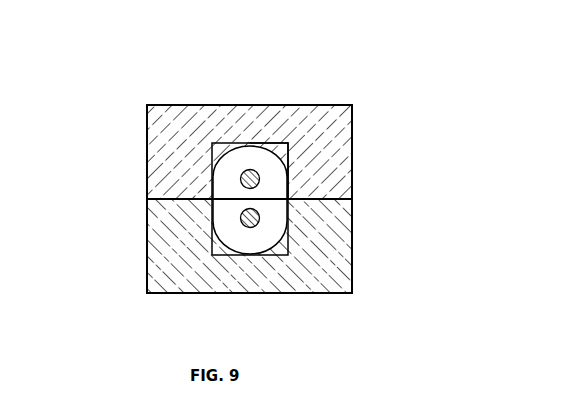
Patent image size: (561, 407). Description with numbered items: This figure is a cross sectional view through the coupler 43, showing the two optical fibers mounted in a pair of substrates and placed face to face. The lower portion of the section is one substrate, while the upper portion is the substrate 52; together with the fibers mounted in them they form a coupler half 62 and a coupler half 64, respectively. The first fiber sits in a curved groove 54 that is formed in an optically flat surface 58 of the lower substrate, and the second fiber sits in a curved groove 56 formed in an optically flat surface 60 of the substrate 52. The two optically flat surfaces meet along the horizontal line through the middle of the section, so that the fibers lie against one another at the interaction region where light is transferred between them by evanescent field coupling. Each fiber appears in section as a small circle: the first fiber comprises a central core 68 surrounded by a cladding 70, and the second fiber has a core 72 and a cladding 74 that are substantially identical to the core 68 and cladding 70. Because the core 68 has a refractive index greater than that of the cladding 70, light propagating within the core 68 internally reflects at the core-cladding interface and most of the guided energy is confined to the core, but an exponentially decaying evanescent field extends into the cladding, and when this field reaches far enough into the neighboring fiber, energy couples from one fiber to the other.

The coupler 43 is at (457, 115).
The substrate 52 is at (265, 105).
The curved groove 54 is at (286, 246).
The curved groove 56 is at (288, 152).
The optically flat surface 58 is at (153, 198).
The optically flat surface 60 is at (343, 200).
The coupler half 62 is at (412, 283).
The coupler half 64 is at (87, 88).
The central core 68 is at (240, 217).
The cladding 70 is at (218, 245).
The core 72 is at (249, 169).
The cladding 74 is at (212, 143).